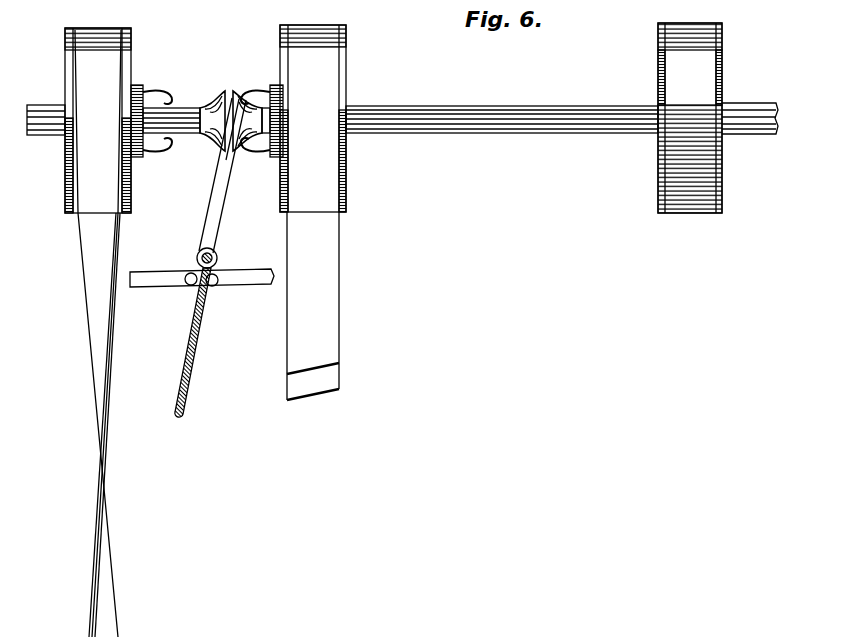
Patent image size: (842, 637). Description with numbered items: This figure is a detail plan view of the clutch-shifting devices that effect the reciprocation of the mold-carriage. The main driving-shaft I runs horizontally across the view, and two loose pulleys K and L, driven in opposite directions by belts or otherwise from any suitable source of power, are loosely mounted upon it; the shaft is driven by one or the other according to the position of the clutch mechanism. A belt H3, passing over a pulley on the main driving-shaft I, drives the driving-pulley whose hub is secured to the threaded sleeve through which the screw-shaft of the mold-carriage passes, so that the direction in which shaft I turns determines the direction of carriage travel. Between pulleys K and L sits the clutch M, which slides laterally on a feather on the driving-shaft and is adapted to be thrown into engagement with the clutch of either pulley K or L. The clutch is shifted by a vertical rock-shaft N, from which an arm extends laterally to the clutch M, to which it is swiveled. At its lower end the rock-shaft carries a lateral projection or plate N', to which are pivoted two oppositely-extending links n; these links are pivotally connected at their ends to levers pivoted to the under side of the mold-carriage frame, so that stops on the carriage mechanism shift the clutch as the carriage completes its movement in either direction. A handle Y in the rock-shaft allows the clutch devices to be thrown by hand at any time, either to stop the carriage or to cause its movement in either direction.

The loose pulley K is at (124, 72).
The loose pulley L is at (323, 212).
The main driving-shaft I is at (545, 133).
The belt H3 is at (698, 213).
The clutch M is at (214, 92).
The vertical rock-shaft N is at (193, 254).
The lateral projection or plate N' is at (203, 294).
The links n is at (169, 286).
The handle Y is at (189, 364).